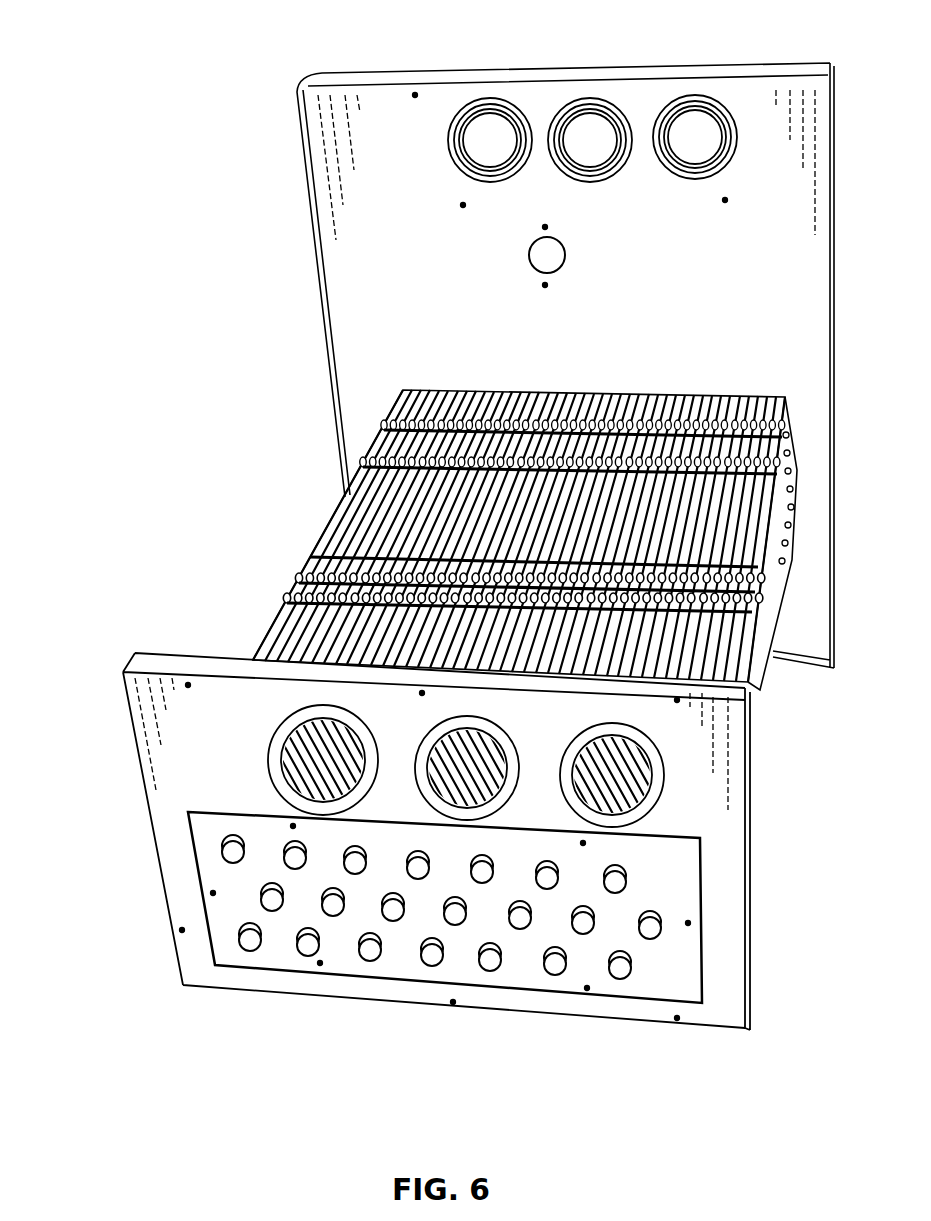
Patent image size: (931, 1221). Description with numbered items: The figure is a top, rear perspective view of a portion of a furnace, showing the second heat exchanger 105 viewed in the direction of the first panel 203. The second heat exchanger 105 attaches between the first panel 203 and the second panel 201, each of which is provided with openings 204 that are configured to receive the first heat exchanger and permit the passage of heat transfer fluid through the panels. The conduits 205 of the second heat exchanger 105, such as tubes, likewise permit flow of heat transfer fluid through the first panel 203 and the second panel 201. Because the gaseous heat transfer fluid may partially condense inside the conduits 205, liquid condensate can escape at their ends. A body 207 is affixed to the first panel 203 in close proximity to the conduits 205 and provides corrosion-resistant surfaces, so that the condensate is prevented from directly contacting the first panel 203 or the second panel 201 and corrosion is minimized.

The second heat exchanger 105 is at (405, 528).
The second panel 201 is at (322, 157).
The first panel 203 is at (135, 714).
The openings 204 is at (493, 120).
The conduits 205 is at (557, 970).
The body 207 is at (680, 988).